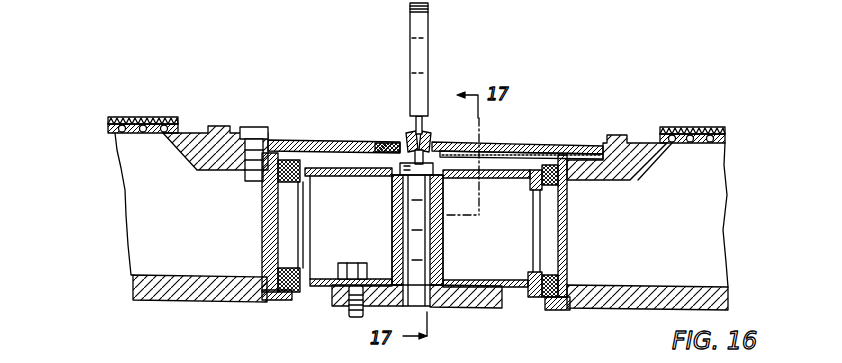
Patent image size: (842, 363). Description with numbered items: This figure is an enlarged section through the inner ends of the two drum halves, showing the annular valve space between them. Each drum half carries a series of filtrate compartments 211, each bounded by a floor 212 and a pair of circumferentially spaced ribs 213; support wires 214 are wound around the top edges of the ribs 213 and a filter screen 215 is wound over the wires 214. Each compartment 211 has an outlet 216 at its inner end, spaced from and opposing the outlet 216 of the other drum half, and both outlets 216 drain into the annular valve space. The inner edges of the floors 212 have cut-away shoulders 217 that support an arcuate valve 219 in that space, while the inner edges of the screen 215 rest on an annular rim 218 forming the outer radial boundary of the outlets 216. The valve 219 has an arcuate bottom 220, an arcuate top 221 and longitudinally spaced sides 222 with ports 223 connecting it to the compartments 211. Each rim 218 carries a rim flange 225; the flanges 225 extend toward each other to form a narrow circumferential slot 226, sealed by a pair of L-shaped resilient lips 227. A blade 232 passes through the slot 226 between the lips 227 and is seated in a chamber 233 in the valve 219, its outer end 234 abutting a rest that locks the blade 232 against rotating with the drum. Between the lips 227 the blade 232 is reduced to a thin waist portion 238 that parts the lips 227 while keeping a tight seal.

The filtrate compartment 211 is at (135, 243).
The floor 212 is at (713, 302).
The rib 213 is at (700, 236).
The support wire 214 is at (115, 138).
The filter screen 215 is at (122, 117).
The outlet 216 is at (620, 283).
The cut-away shoulder 217 is at (543, 300).
The annular rim 218 is at (193, 155).
The arcuate valve 219 is at (310, 312).
The bottom 220 is at (513, 283).
The top 221 is at (461, 176).
The side 222 is at (300, 213).
The port 223 is at (283, 246).
The rim flange 225 is at (292, 140).
The circumferential slot 226 is at (428, 136).
The resilient lip 227 is at (407, 136).
The blade 232 is at (415, 212).
The chamber 233 is at (433, 266).
The outer end 234 is at (462, 6).
The thin waist portion 238 is at (412, 138).